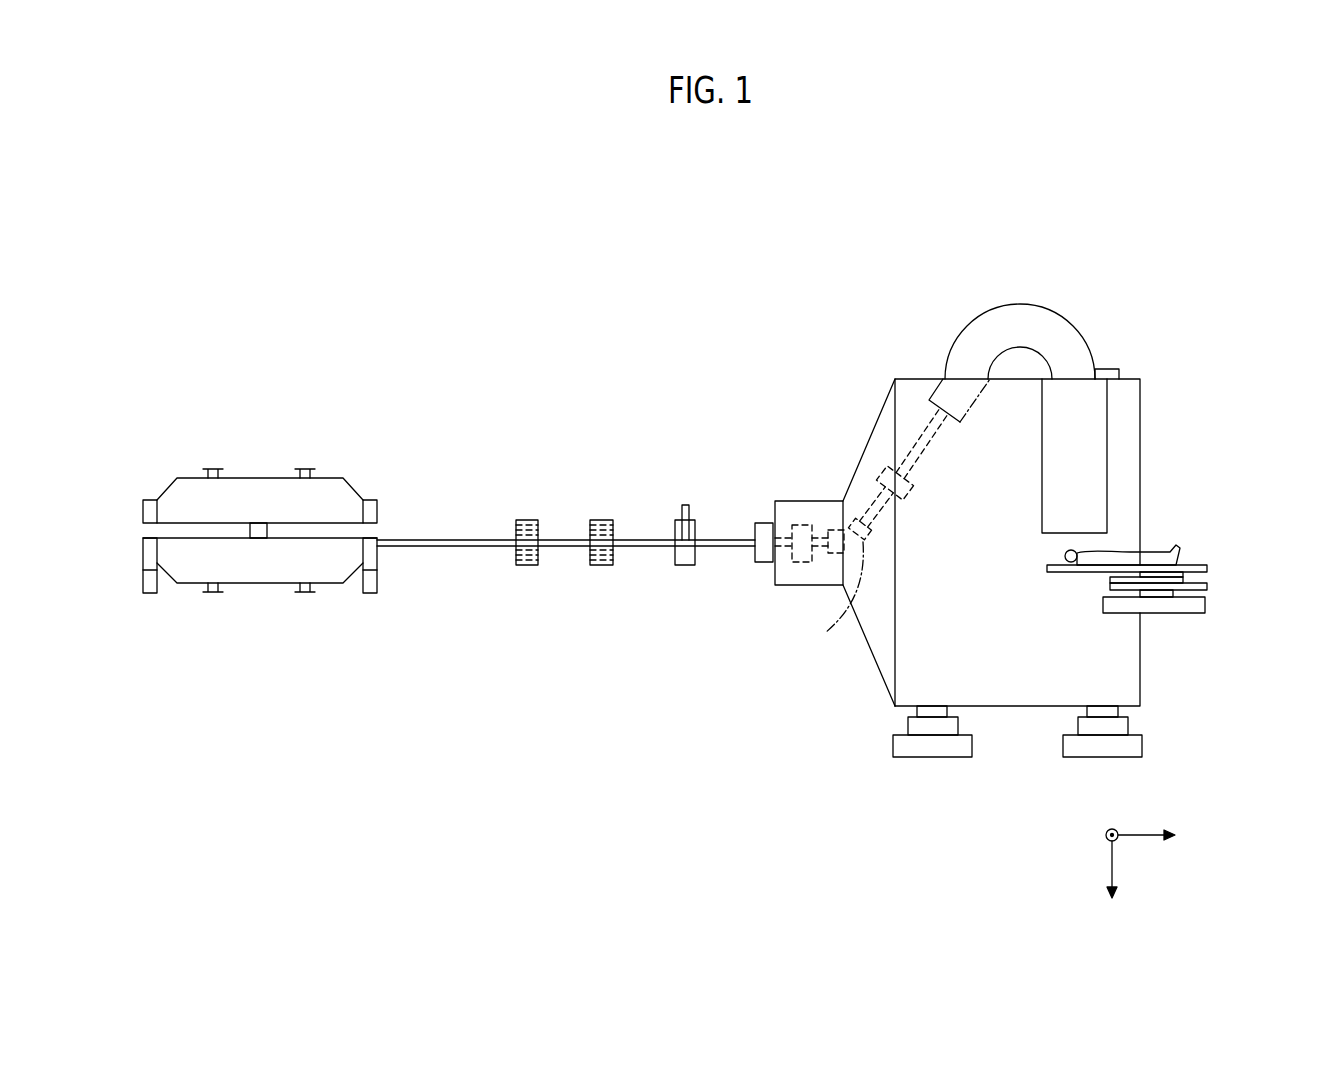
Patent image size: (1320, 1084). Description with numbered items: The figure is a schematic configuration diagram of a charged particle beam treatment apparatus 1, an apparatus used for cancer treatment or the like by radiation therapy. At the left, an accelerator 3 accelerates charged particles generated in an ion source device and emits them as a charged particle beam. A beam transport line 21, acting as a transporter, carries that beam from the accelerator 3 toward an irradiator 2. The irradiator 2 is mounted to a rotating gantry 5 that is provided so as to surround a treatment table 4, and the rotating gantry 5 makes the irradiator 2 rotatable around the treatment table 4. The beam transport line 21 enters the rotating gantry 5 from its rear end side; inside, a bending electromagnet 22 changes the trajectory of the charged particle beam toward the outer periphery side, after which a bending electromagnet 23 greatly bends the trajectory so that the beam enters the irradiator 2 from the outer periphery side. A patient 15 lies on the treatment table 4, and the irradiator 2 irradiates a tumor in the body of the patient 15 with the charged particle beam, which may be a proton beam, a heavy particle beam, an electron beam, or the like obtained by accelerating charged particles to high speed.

The charged particle beam treatment apparatus 1 is at (224, 244).
The irradiator 2 is at (1114, 427).
The accelerator 3 is at (189, 478).
The treatment table 4 is at (1208, 566).
The rotating gantry 5 is at (1142, 663).
The patient 15 is at (1105, 545).
The beam transport line 21 is at (1084, 250).
The bending electromagnet 22 is at (880, 539).
The bending electromagnet 23 is at (1076, 346).